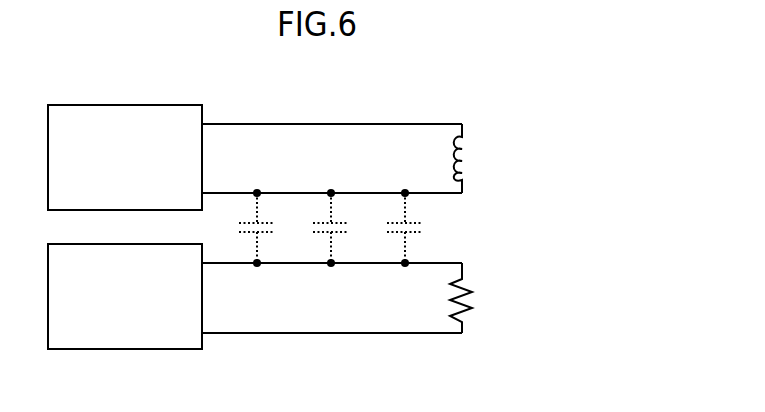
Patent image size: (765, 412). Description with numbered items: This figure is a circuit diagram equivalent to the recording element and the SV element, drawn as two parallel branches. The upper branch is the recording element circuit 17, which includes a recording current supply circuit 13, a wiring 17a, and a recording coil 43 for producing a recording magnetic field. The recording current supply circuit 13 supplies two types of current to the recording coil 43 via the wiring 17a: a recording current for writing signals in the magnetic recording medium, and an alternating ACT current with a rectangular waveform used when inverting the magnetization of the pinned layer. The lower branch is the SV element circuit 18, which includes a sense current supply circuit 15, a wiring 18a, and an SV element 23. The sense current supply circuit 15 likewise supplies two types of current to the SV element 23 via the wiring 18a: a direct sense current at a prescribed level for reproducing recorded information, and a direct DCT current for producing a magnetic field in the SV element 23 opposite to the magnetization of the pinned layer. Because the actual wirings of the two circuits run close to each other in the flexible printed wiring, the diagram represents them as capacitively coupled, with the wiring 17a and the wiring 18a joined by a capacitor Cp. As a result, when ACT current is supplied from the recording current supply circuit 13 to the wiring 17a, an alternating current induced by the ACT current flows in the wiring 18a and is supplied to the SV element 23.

The recording current supply circuit 13 is at (168, 105).
The sense current supply circuit 15 is at (168, 244).
The recording element circuit 17 is at (374, 133).
The wiring 17a is at (336, 113).
The recording coil 43 is at (488, 162).
The SV element circuit 18 is at (374, 327).
The wiring 18a is at (336, 345).
The SV element 23 is at (488, 297).
The capacitor Cp is at (489, 233).